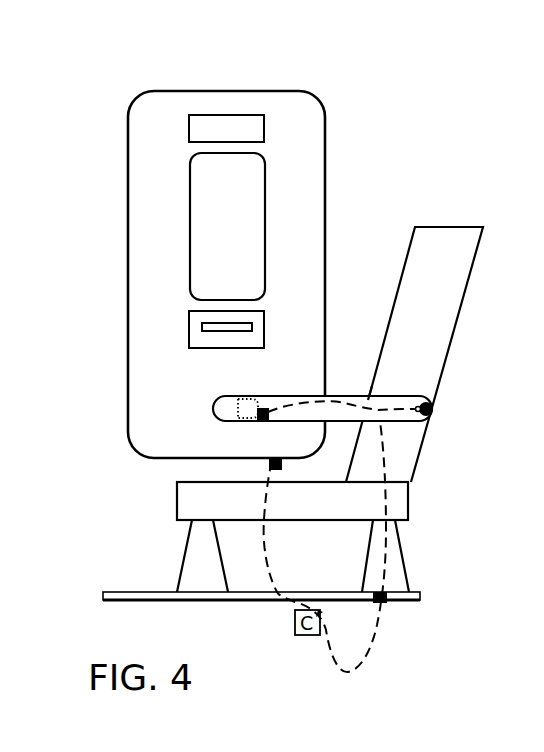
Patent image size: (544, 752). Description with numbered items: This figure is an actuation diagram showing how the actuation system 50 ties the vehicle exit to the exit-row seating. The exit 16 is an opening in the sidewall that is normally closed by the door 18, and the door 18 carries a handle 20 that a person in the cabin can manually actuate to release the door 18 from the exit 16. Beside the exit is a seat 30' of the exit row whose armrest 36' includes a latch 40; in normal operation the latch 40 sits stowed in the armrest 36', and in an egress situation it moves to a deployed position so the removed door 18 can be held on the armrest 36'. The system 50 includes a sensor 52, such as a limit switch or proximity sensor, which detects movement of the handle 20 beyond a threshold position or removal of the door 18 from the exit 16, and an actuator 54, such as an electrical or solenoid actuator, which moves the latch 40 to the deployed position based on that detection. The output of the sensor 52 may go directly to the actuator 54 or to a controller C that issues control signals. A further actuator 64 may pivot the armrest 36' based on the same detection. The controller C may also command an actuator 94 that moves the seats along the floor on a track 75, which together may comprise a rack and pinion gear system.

The exit 16 is at (326, 166).
The door 18 is at (300, 121).
The handle 20 is at (203, 323).
The seat 30' is at (414, 342).
The armrest 36' is at (354, 357).
The latch 40 is at (236, 400).
The actuation system 50 is at (445, 560).
The sensor 52 is at (269, 457).
The actuator 54 is at (268, 406).
The actuator 64 is at (434, 409).
The track 75 is at (129, 592).
The actuator 94 is at (386, 602).